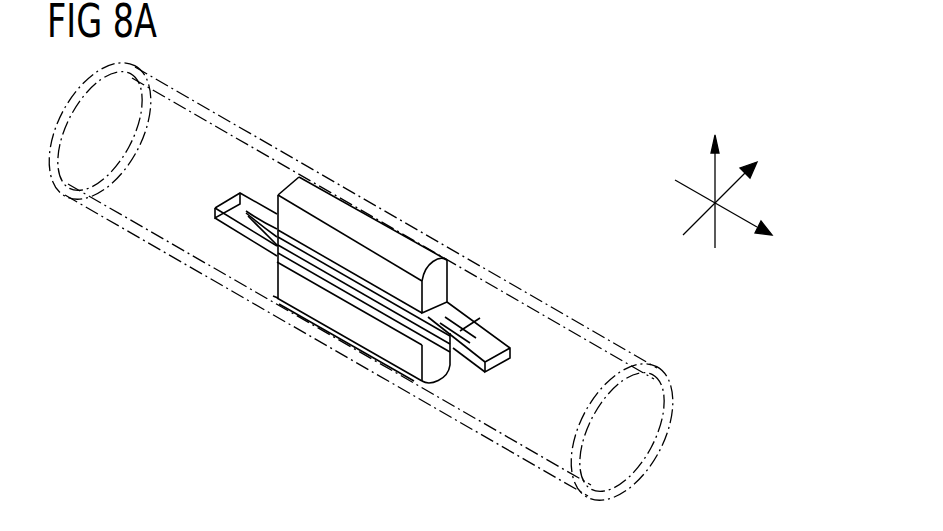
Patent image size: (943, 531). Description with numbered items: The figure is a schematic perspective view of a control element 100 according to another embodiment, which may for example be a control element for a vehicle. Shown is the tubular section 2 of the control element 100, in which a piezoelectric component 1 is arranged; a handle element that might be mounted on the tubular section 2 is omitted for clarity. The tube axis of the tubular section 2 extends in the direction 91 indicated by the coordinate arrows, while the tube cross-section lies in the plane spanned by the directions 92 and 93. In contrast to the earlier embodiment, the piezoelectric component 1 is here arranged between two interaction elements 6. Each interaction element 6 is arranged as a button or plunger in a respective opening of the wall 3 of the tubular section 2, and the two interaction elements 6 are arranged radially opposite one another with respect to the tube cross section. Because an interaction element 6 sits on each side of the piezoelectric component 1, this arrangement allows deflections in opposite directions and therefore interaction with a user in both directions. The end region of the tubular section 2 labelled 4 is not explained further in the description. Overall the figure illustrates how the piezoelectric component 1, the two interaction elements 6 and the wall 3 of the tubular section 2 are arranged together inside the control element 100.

The piezoelectric component 1 is at (362, 299).
The tubular section 2 is at (105, 190).
The wall 3 is at (670, 383).
The tube end opening 4 is at (633, 457).
The interaction element 6 is at (394, 246).
The direction 91 is at (732, 220).
The direction 92 is at (712, 173).
The direction 93 is at (732, 188).
The control element 100 is at (508, 128).